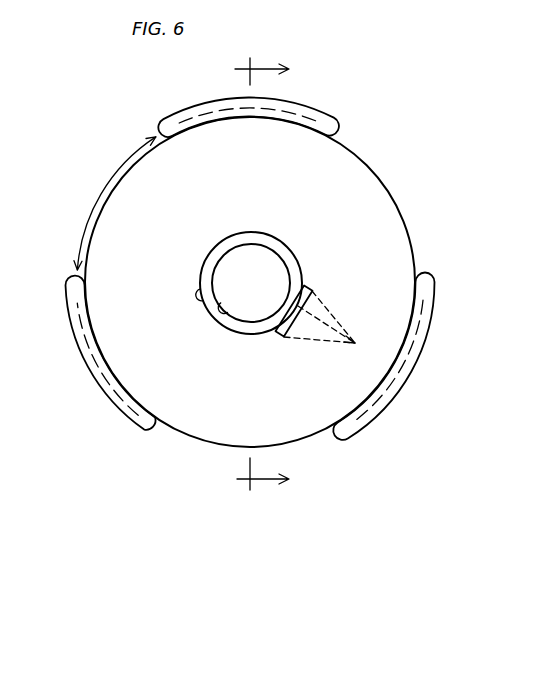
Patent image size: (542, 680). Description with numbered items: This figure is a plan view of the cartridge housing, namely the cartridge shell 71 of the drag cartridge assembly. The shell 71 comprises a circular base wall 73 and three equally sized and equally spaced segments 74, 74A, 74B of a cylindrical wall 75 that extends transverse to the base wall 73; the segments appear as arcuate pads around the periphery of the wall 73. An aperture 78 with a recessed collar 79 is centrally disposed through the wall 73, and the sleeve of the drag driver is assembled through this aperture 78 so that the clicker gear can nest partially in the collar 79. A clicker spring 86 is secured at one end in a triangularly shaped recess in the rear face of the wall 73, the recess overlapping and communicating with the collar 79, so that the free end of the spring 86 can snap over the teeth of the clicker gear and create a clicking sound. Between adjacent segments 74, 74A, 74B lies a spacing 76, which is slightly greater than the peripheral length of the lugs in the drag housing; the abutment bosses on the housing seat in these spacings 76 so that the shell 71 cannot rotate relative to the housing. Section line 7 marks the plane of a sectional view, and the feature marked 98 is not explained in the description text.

The section line 7- 7 is at (262, 271).
The cartridge shell 71 is at (422, 233).
The circular base wall 73 is at (370, 213).
The segment of cylindrical wall 74 is at (130, 410).
The segment of cylindrical wall 74A is at (413, 355).
The segment of cylindrical wall 74B is at (317, 120).
The cylindrical wall 75 is at (88, 369).
The spacing 76 is at (118, 172).
The aperture 78 is at (228, 318).
The recessed collar 79 is at (203, 297).
The clicker spring 86 is at (338, 346).
The slot 98 is at (410, 300).